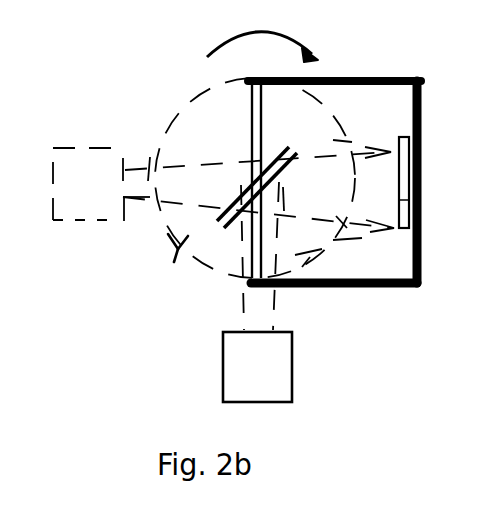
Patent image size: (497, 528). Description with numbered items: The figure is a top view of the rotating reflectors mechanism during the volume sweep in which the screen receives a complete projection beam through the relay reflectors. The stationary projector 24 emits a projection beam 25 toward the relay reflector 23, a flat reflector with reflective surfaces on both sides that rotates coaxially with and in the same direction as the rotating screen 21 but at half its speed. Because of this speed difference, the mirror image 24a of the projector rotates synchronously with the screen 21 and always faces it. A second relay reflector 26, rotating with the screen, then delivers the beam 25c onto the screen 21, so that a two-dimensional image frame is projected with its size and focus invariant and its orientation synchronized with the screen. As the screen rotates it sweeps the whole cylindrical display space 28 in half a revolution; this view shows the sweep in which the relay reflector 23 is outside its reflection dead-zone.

The rotating screen 21 is at (247, 111).
The relay reflector 23 is at (233, 190).
The stationary projector 24 is at (223, 367).
The mirror image of the stationary projector 24a is at (98, 208).
The projection beam 25 is at (237, 308).
The reflected light beam 25c is at (355, 242).
The second relay reflector 26 is at (422, 218).
The cylindrical display space 28 is at (213, 273).